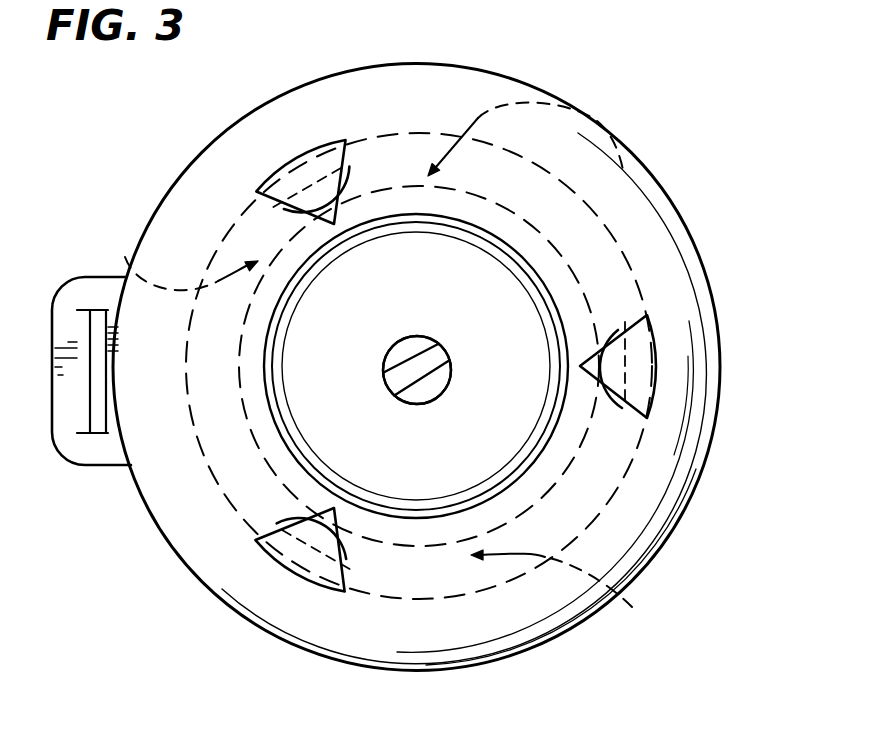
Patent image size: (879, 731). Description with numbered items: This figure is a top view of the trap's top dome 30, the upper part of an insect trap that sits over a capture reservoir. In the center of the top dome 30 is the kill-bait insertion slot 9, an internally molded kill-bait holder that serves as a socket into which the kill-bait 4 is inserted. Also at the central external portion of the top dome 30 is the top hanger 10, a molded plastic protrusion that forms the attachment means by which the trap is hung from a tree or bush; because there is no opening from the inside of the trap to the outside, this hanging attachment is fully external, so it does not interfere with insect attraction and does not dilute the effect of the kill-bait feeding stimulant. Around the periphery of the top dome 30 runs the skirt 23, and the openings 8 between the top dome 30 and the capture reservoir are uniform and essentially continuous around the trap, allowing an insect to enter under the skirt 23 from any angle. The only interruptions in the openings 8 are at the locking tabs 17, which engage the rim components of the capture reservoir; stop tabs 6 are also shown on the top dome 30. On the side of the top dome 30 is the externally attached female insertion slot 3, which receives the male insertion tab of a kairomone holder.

The female insertion slot 3 is at (97, 390).
The kill-bait 4 is at (470, 387).
The stop tabs 6 is at (292, 512).
The openings 8 is at (125, 257).
The kill-bait insertion slot 9 is at (433, 342).
The top hanger 10 is at (402, 363).
The locking tabs 17 is at (322, 545).
The skirt 23 is at (720, 351).
The top dome 30 is at (487, 237).